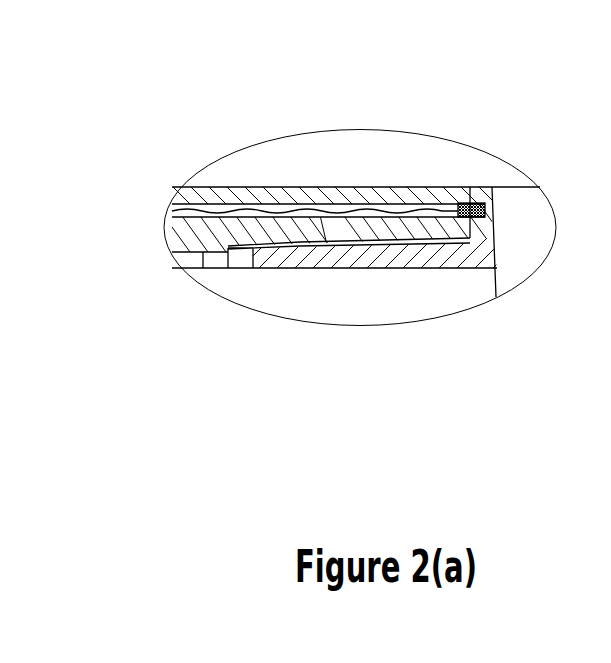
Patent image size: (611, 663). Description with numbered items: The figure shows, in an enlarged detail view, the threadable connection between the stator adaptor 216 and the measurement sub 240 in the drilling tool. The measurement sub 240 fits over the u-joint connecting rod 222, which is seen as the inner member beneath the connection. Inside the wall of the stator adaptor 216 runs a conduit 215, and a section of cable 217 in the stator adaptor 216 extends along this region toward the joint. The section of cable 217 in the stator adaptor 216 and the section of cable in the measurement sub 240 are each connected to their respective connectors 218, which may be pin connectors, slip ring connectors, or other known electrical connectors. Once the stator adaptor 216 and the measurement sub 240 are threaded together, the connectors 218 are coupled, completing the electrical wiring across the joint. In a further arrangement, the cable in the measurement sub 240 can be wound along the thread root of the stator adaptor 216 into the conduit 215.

The conduit 215 is at (200, 203).
The stator adaptor 216 is at (317, 195).
The section of cable 217 is at (267, 207).
The connectors 218 is at (468, 203).
The u-joint connecting rod 222 is at (333, 294).
The measurement sub 240 is at (519, 207).